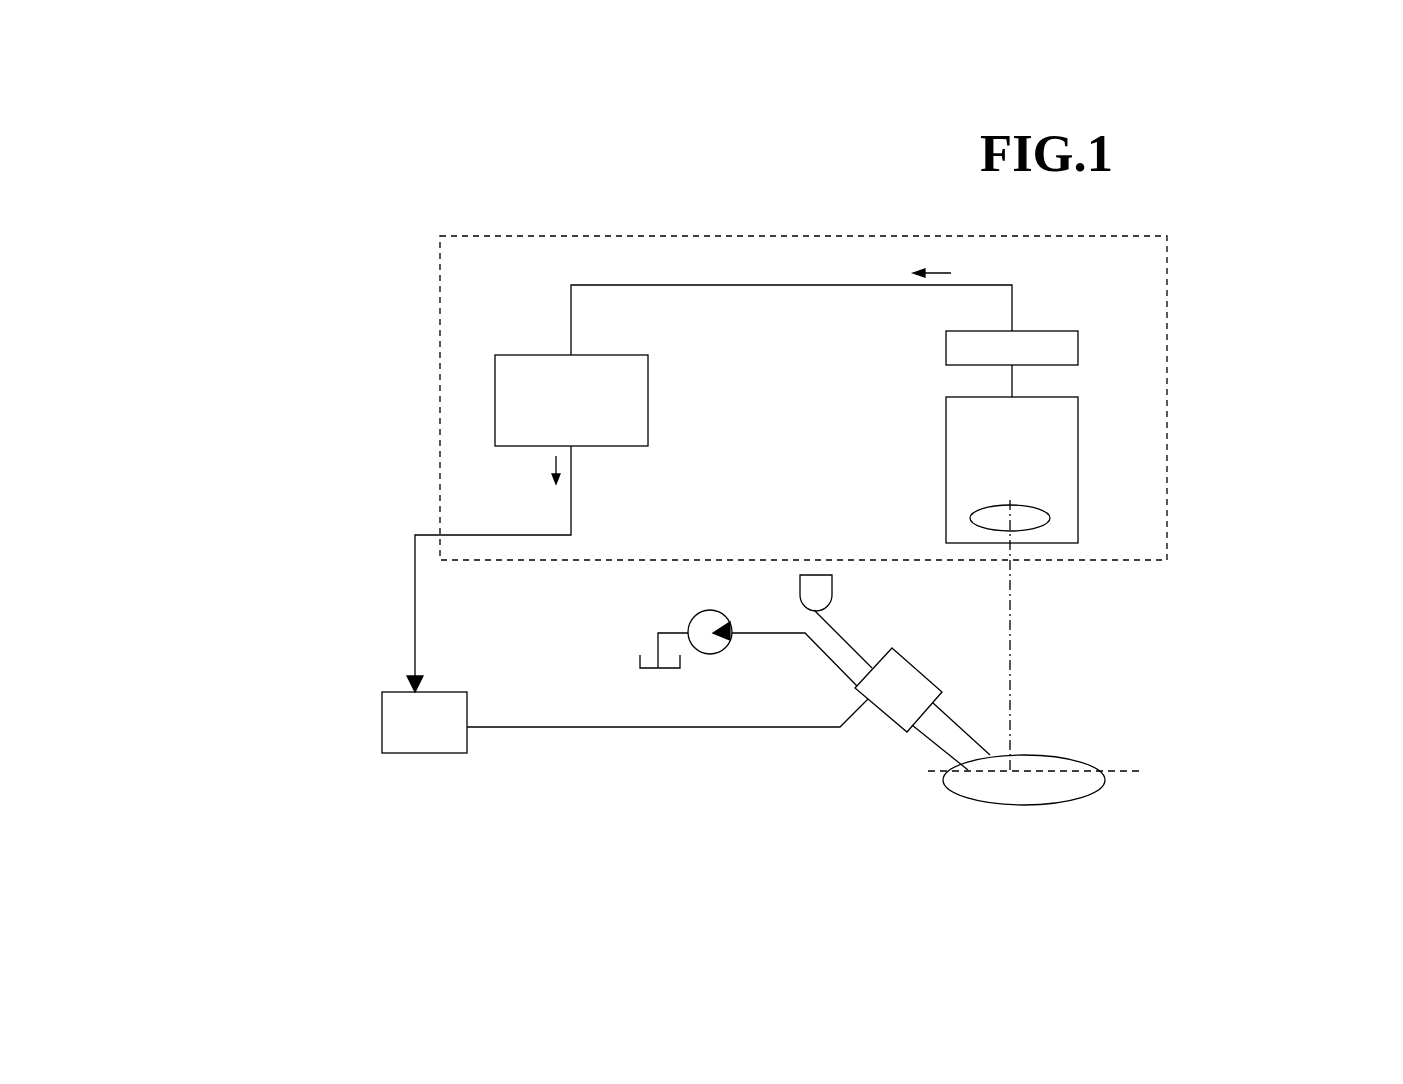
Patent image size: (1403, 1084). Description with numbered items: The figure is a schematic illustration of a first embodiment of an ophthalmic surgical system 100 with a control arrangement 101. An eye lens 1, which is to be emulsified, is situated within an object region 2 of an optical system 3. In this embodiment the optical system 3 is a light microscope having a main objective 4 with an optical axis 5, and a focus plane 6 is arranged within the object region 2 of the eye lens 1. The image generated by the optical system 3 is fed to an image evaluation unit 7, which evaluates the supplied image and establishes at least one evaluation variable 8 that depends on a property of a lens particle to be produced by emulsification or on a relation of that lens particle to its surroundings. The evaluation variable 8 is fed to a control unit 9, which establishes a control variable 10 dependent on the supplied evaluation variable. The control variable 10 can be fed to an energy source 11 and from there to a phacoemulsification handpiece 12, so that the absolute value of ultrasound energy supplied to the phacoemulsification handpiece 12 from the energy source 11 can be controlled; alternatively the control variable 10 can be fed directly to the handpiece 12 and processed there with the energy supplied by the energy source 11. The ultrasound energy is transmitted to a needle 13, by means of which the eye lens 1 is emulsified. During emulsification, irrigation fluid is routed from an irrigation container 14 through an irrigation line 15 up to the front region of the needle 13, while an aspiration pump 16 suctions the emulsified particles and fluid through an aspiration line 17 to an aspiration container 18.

The eye lens 1 is at (1087, 797).
The object region 2 is at (1093, 782).
The optical system 3 is at (1078, 450).
The main objective 4 is at (1050, 518).
The optical axis 5 is at (1010, 617).
The focus plane 6 is at (1110, 772).
The image evaluation unit 7 is at (1078, 350).
The evaluation variable 8 is at (933, 272).
The control unit 9 is at (495, 372).
The control variable 10 is at (552, 472).
The energy source 11 is at (382, 717).
The phacoemulsification handpiece 12 is at (870, 728).
The needle 13 is at (938, 740).
The irrigation container 14 is at (825, 590).
The irrigation line 15 is at (850, 645).
The aspiration pump 16 is at (713, 654).
The aspiration line 17 is at (778, 634).
The aspiration container 18 is at (640, 658).
The ophthalmic surgical system 100 is at (374, 261).
The control arrangement 101 is at (1167, 262).